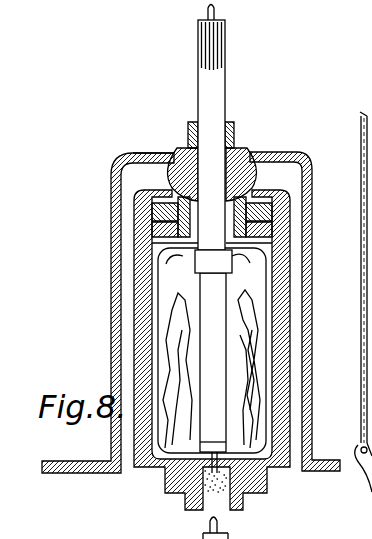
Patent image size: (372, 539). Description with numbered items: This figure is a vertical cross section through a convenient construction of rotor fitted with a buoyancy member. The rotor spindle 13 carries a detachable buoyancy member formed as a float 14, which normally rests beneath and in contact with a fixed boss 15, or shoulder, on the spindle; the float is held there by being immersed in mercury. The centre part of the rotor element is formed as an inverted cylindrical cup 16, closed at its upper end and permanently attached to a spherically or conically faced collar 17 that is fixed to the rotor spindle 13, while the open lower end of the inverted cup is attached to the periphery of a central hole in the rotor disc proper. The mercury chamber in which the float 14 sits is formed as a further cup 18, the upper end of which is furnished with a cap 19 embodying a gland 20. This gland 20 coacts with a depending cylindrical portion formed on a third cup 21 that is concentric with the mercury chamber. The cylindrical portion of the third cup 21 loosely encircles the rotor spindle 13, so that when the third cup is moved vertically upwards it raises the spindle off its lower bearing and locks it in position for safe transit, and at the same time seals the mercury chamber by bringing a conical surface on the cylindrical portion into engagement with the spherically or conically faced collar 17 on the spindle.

The rotor spindle 13 is at (215, 90).
The float 14 is at (240, 320).
The fixed boss 15 is at (207, 257).
The inverted cylindrical cup 16 is at (283, 163).
The spherically or conically faced collar 17 is at (243, 152).
The further cup 18 is at (278, 418).
The cap 19 is at (143, 208).
The gland 20 is at (145, 230).
The third cup 21 is at (156, 150).